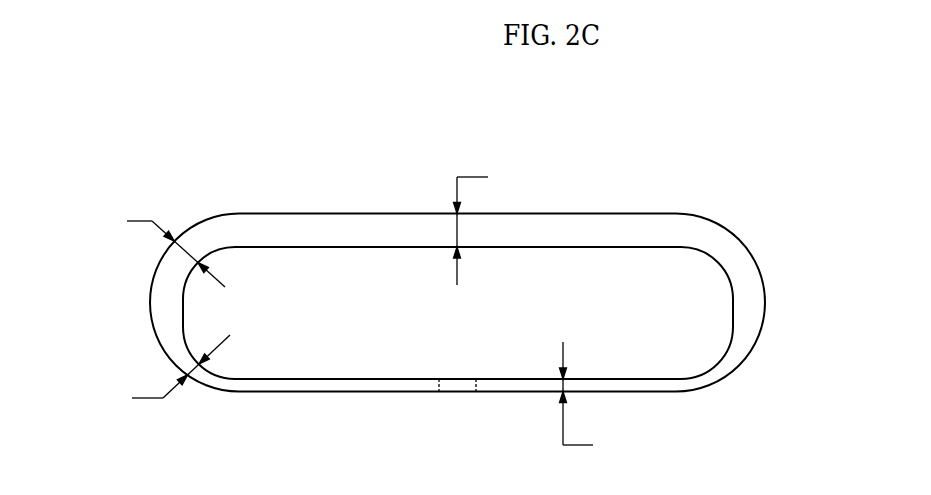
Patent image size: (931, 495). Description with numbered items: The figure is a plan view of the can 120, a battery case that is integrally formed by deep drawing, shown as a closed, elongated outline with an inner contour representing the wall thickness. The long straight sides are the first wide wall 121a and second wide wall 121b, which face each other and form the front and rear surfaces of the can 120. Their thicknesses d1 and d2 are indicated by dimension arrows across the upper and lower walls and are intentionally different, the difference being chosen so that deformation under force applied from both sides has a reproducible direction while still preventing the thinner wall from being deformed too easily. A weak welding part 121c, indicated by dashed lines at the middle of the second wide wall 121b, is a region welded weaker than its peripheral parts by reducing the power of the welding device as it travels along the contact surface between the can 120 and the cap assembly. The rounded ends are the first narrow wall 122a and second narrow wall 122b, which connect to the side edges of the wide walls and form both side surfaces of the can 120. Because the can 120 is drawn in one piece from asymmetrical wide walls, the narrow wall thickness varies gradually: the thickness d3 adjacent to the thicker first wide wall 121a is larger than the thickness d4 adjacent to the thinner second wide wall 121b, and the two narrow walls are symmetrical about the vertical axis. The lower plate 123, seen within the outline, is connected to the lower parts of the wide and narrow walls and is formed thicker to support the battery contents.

The can 120 is at (78, 132).
The first wide wall 121a is at (360, 206).
The second wide wall 121b is at (360, 399).
The weak welding part 121c is at (456, 385).
The first narrow wall 122a is at (138, 302).
The second narrow wall 122b is at (776, 301).
The lower plate 123 is at (698, 340).
The thickness of first wide wall d1 is at (471, 219).
The thickness of second wide wall d2 is at (578, 393).
The thickness of narrow wall region adjacent first wide wall d3 is at (176, 242).
The thickness of narrow wall region adjacent second wide wall d4 is at (181, 367).